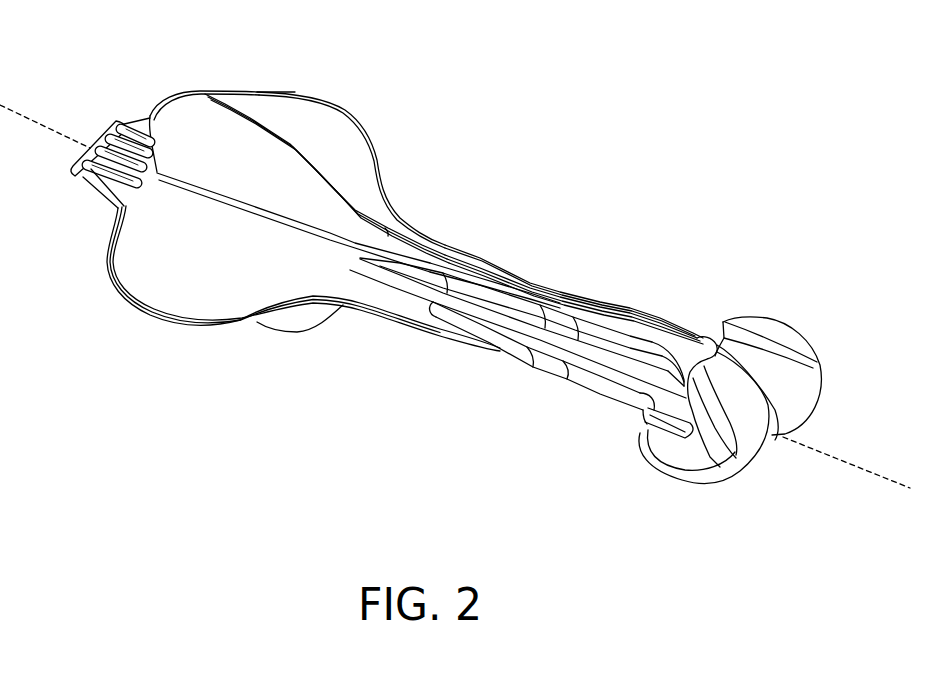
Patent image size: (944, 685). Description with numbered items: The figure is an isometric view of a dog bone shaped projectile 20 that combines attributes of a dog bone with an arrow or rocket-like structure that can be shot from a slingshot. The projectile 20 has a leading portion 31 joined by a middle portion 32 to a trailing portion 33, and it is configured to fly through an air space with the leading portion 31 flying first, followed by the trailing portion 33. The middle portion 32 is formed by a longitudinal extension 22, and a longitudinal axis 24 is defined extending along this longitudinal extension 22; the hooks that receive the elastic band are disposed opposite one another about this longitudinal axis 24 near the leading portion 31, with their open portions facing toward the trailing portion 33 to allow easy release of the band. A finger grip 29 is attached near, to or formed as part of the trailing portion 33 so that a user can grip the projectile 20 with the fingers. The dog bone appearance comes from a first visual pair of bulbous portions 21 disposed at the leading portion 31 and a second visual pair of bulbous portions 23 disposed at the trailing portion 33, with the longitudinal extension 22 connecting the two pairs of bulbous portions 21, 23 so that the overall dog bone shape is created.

The projectile 20 is at (616, 165).
The first visual pair of bulbous portions 21 is at (793, 366).
The longitudinal extension 22 is at (559, 305).
The second visual pair of bulbous portions 23 is at (190, 268).
The longitudinal axis 24 is at (42, 128).
The finger grip 29 is at (92, 170).
The leading portion 31 is at (680, 533).
The middle portion 32 is at (464, 392).
The trailing portion 33 is at (140, 352).